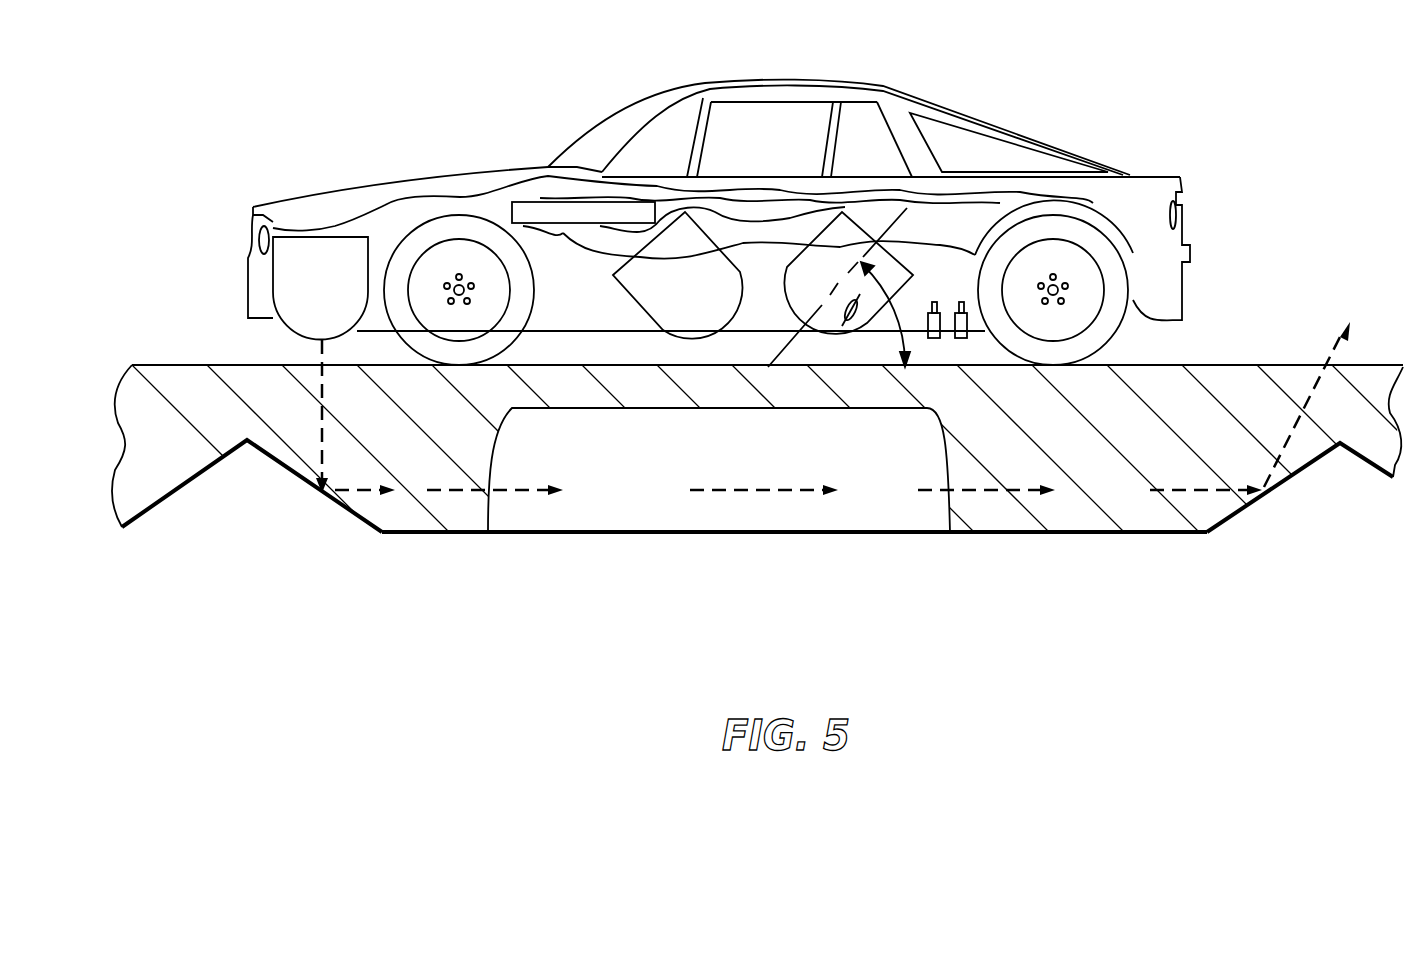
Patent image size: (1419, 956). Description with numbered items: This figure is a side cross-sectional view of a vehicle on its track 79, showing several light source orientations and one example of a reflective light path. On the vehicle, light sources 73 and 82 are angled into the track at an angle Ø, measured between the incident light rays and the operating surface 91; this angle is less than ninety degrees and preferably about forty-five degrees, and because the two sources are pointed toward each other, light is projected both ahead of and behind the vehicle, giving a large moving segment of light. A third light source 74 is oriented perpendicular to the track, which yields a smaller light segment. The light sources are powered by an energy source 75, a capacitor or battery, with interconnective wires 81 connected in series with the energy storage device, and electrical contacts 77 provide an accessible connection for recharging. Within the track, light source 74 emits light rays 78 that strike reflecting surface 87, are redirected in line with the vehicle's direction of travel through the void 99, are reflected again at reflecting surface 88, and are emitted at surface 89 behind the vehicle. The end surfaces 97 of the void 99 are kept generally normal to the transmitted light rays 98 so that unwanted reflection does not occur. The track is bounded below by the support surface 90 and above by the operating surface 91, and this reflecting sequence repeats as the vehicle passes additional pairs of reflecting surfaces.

The light source 73 is at (934, 302).
The light source 74 is at (322, 237).
The energy source 75 is at (520, 202).
The electrical contacts 77 is at (960, 302).
The light rays 78 is at (320, 433).
The track 79 is at (765, 509).
The interconnective wires 81 is at (803, 248).
The light source 82 is at (683, 212).
The reflecting surface 87 is at (300, 477).
The reflecting surface 88 is at (1278, 488).
The emitting surface 89 is at (1320, 366).
The support surface 90 is at (1097, 532).
The operating surface 91 is at (232, 365).
The end surfaces 97 is at (492, 457).
The transmitted light rays 98 is at (363, 492).
The void 99 is at (612, 510).